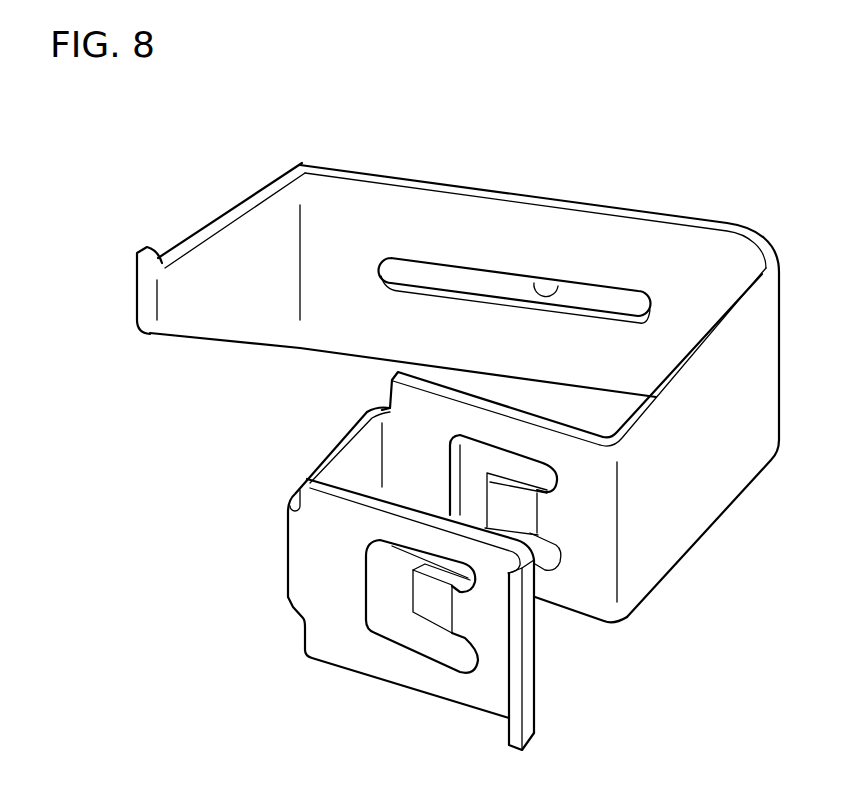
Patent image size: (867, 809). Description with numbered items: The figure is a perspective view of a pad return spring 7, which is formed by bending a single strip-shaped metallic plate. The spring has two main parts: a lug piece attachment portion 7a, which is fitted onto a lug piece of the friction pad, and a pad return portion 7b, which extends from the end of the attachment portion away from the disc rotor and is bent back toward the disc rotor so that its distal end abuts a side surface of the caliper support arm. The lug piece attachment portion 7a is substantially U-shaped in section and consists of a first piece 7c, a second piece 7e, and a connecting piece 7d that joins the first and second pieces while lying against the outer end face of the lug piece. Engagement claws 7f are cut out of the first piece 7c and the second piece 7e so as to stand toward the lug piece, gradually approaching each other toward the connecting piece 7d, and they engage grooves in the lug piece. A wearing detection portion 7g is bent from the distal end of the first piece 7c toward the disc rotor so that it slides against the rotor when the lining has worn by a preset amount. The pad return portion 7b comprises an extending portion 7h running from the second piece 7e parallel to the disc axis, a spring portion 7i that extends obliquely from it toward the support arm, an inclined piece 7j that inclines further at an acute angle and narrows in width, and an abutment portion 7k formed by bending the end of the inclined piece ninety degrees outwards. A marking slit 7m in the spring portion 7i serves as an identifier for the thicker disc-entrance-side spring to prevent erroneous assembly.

The pad return spring 7 is at (449, 69).
The lug piece attachment portion 7a is at (585, 636).
The pad return portion 7b is at (645, 203).
The first piece 7c is at (389, 668).
The connecting piece 7d is at (348, 462).
The second piece 7e is at (565, 450).
The engagement claw 7f is at (495, 498).
The wearing detection portion 7g is at (514, 705).
The extending portion 7h is at (708, 515).
The spring portion 7i is at (468, 215).
The inclined piece 7j is at (230, 240).
The abutment portion 7k is at (152, 298).
The marking slit 7m is at (535, 279).